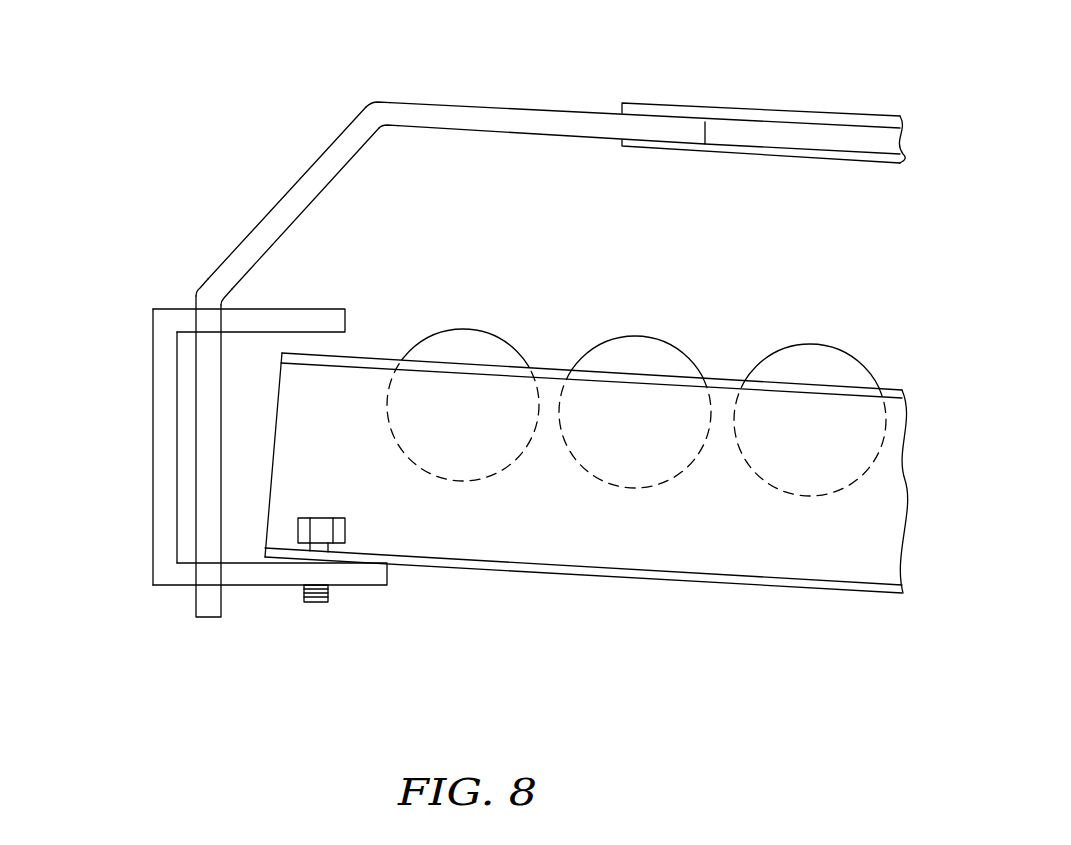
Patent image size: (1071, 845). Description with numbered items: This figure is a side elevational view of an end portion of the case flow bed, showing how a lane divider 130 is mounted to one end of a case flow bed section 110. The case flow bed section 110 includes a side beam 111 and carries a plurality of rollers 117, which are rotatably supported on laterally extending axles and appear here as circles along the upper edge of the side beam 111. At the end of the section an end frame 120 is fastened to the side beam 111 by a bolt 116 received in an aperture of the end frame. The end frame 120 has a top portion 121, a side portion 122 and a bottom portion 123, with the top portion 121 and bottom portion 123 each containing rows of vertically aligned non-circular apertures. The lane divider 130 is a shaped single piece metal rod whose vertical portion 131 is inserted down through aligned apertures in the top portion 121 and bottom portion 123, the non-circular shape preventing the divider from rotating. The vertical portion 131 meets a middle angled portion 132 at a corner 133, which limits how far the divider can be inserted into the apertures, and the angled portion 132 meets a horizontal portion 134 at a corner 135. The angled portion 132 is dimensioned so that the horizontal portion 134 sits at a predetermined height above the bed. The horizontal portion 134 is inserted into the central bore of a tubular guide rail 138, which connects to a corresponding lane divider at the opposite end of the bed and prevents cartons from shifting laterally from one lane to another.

The case flow bed section 110 is at (495, 651).
The side beam 111 is at (843, 550).
The bolt 116 is at (312, 517).
The rollers 117 is at (751, 347).
The end frame 120 is at (366, 318).
The top portion 121 is at (308, 307).
The side portion 122 is at (150, 510).
The bottom portion 123 is at (254, 587).
The lane divider 130 is at (293, 139).
The vertical portion 131 is at (205, 408).
The middle angled portion 132 is at (285, 195).
The corner 133 is at (200, 290).
The horizontal portion 134 is at (513, 108).
The corner 135 is at (372, 100).
The tubular guide rail 138 is at (798, 110).